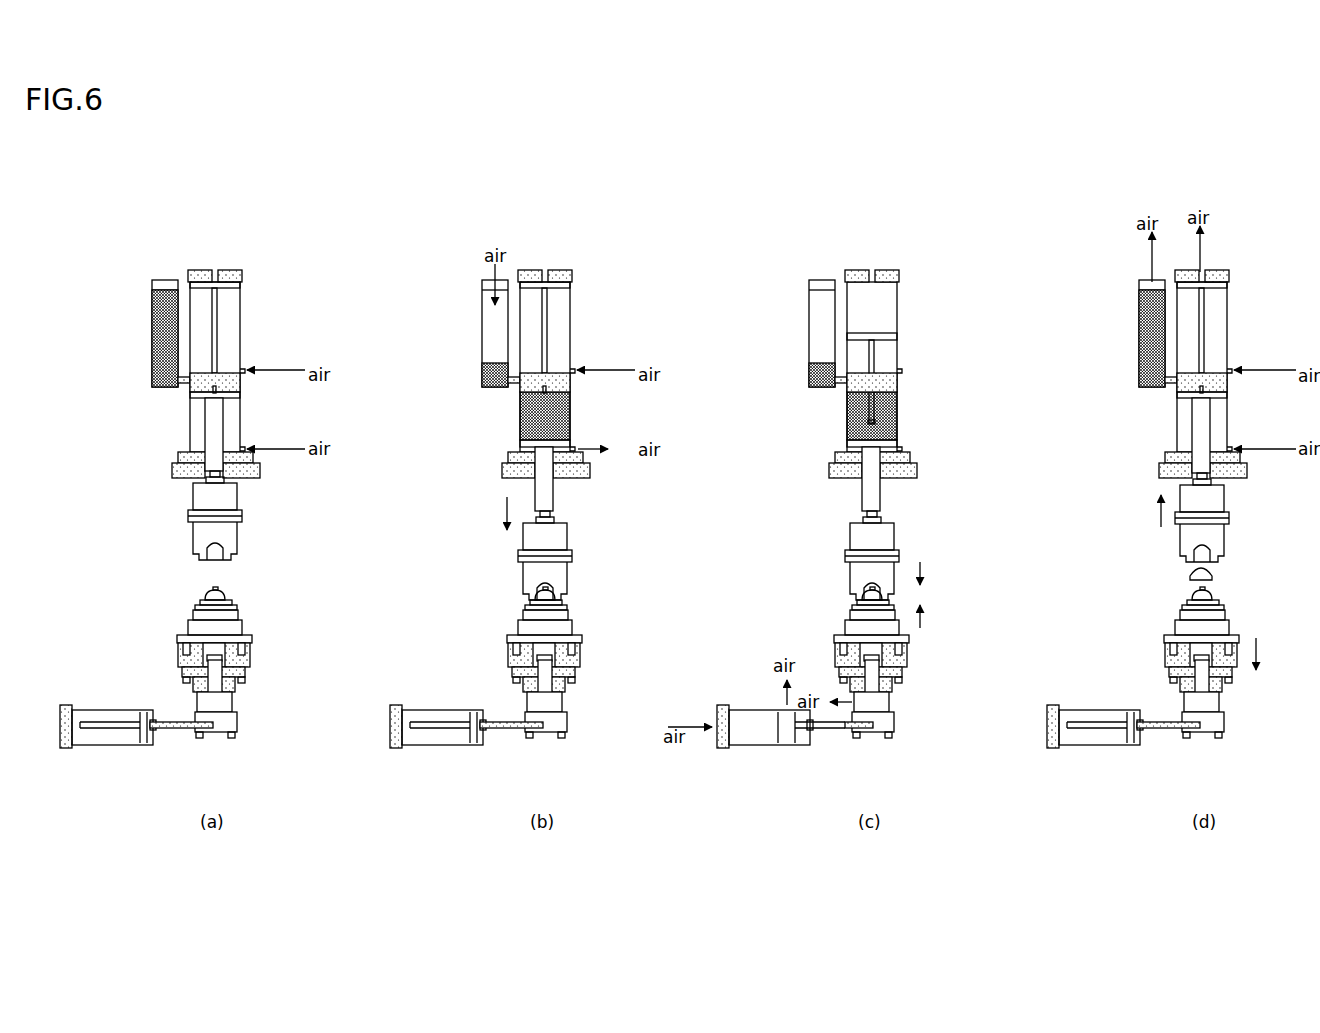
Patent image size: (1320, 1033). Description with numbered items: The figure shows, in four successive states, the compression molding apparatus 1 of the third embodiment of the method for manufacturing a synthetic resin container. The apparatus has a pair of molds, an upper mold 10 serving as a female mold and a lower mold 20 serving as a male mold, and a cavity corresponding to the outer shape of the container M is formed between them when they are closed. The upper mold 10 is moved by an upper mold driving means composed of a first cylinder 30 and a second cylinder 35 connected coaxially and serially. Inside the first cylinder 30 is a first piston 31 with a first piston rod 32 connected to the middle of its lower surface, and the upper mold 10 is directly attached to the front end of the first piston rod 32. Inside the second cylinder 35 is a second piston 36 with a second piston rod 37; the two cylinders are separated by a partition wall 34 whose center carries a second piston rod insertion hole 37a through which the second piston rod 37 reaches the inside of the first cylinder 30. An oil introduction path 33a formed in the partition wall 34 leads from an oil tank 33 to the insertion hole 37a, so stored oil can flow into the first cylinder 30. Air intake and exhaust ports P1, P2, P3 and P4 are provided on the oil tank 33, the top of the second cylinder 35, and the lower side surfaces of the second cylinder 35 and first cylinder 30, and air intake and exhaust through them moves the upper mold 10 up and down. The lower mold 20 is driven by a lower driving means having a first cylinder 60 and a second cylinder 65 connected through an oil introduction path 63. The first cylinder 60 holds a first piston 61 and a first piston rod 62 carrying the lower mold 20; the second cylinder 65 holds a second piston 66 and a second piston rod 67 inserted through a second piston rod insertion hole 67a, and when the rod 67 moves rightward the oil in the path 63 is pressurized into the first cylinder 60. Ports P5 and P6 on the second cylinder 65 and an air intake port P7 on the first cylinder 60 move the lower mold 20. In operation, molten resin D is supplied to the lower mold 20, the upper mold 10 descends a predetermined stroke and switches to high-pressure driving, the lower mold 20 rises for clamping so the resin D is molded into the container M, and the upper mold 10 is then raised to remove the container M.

The compression molding apparatus 1 is at (1264, 246).
The upper mold 10 is at (740, 536).
The lower mold 20 is at (734, 608).
The first cylinder 30 is at (709, 437).
The first piston 31 is at (741, 429).
The first piston rod 32 is at (656, 454).
The oil tank 33 is at (633, 333).
The oil introduction path 33a is at (634, 384).
The partition wall 34 is at (741, 384).
The second cylinder 35 is at (740, 361).
The second piston 36 is at (741, 300).
The second piston rod 37 is at (752, 355).
The second piston rod insertion hole 37a is at (648, 406).
The first cylinder 60 is at (735, 670).
The first piston 61 is at (743, 725).
The first piston rod 62 is at (744, 693).
The oil introduction path 63 is at (675, 755).
The second cylinder 65 is at (625, 750).
The second piston 66 is at (600, 735).
The second piston rod 67 is at (603, 765).
The second piston rod insertion hole 67a is at (649, 764).
The air intake and exhaust port P1 is at (668, 252).
The air intake and exhaust port P2 is at (716, 247).
The air intake and exhaust port P3 is at (763, 399).
The air intake and exhaust port P4 is at (766, 447).
The air intake and exhaust port P5 is at (541, 714).
The air intake and exhaust port P6 is at (610, 688).
The air intake port P7 is at (665, 684).
The molten resin D is at (212, 590).
The synthetic resin container M is at (1190, 577).